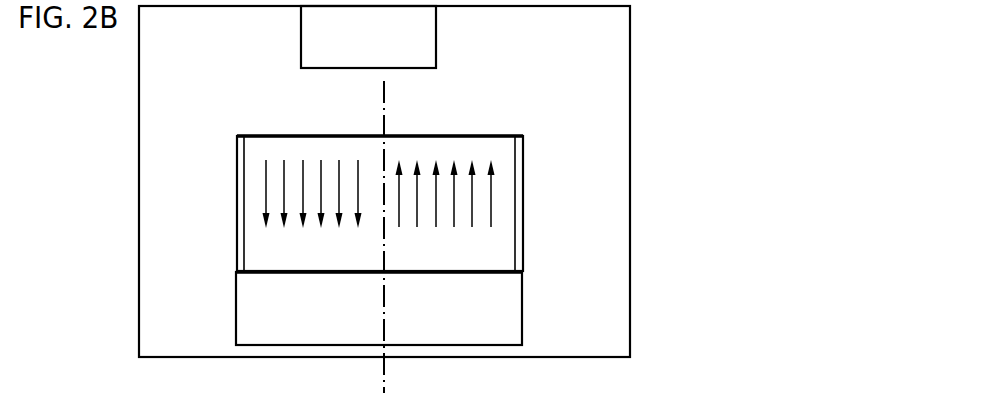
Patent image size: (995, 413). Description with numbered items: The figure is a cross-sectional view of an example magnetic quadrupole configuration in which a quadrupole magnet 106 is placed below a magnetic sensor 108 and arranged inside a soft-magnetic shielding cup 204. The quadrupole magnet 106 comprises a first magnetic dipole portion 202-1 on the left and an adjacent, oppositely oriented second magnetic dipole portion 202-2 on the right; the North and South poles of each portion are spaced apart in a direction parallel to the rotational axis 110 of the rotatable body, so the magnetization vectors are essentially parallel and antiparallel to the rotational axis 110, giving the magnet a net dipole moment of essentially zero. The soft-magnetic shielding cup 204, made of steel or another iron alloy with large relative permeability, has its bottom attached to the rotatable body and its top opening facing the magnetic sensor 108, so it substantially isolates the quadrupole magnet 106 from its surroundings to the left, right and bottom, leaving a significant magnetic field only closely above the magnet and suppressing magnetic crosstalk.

The quadrupole magnet 106 is at (392, 152).
The magnetic sensor 108 is at (436, 35).
The rotational axis 110 is at (384, 90).
The first magnetic dipole portion 202-1 is at (238, 101).
The second magnetic dipole portion 202-2 is at (542, 104).
The soft-magnetic shielding cup 204 is at (522, 305).